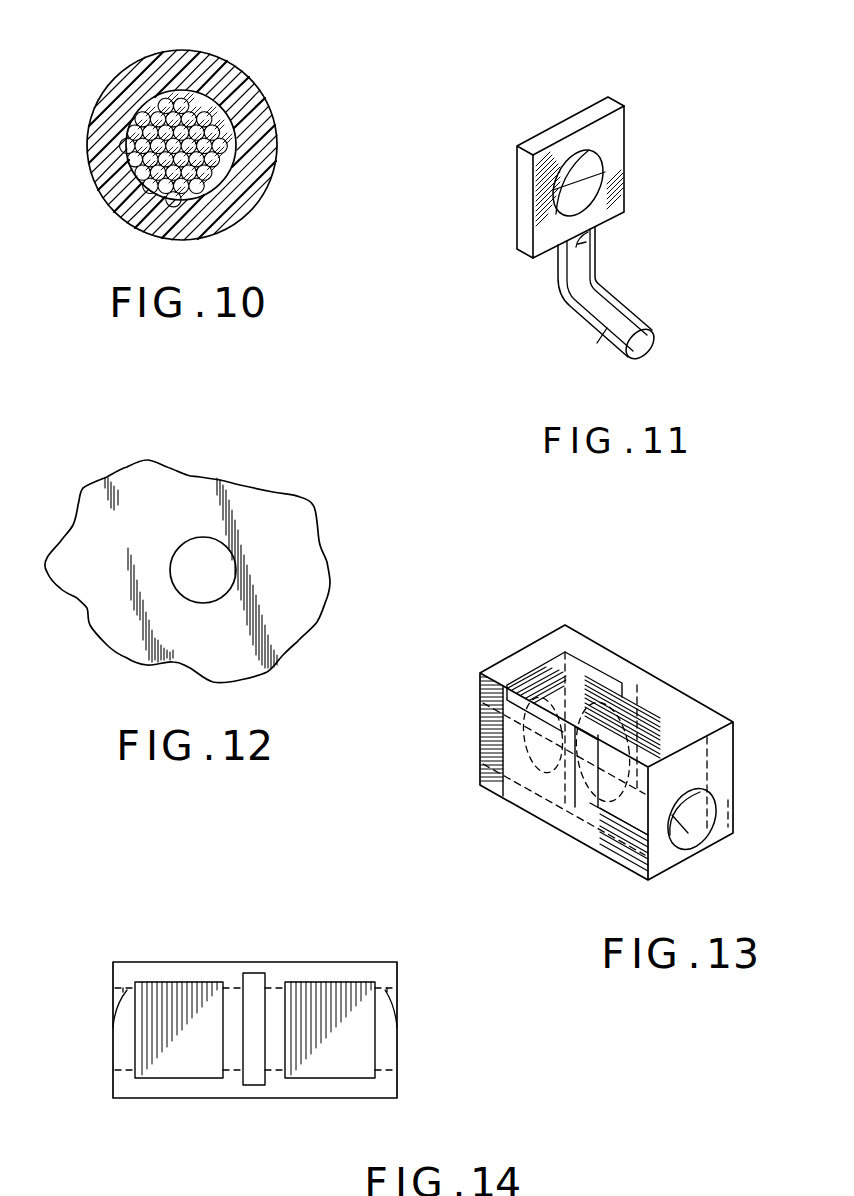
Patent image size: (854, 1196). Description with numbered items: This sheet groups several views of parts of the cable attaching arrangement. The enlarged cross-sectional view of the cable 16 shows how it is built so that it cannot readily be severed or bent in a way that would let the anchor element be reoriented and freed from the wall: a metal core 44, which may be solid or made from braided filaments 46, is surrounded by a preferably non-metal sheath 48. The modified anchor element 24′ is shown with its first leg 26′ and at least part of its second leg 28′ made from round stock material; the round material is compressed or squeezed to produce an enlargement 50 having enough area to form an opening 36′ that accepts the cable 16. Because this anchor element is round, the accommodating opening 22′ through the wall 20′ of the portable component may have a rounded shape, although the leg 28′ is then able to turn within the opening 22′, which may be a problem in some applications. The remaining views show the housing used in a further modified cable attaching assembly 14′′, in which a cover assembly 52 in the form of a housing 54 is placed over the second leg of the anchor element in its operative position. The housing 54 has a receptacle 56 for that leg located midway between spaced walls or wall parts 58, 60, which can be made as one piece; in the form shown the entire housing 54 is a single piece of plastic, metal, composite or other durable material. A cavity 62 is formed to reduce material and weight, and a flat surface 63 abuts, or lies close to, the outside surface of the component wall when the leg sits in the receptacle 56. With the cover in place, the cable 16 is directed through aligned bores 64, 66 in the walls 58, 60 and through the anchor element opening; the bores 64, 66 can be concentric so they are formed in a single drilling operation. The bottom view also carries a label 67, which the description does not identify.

In FIG. 10, the cable 16 is at (247, 205).
In FIG. 10, the sheath 48 is at (110, 85).
In FIG. 10, the braided filaments 46 is at (110, 205).
In FIG. 10, the metal core 44 is at (128, 122).
In FIG. 11, the enlargement 50 is at (604, 194).
In FIG. 11, the anchor element 24′ is at (626, 170).
In FIG. 11, the opening 36′ is at (625, 195).
In FIG. 11, the second leg 28′ is at (580, 260).
In FIG. 11, the first leg 26′ is at (603, 333).
In FIG. 12, the wall 20′ is at (297, 573).
In FIG. 12, the accommodating opening 22′ is at (197, 602).
In FIG. 13, the cable attaching assembly 14′′ is at (611, 756).
In FIG. 14, the cable attaching assembly 14′′ is at (282, 1021).
In FIG. 13, the cover assembly 52 is at (607, 756).
In FIG. 14, the cover assembly 52 is at (244, 1021).
In FIG. 13, the wall/wall part 60 is at (480, 703).
In FIG. 14, the wall/wall part 60 is at (115, 978).
In FIG. 13, the flat surface 63 is at (600, 857).
In FIG. 14, the flat surface 63 is at (148, 968).
In FIG. 13, the housing 54 is at (547, 785).
In FIG. 14, the housing 54 is at (362, 1087).
In FIG. 13, the wall/wall part 58 is at (697, 770).
In FIG. 14, the wall/wall part 58 is at (397, 980).
In FIG. 13, the bore 64 is at (687, 833).
In FIG. 14, the bore 64 is at (398, 1032).
In FIG. 14, the cavity 62 is at (375, 1050).
In FIG. 14, the receptacle 56 is at (263, 1038).
In FIG. 14, the bore 66 is at (113, 1027).
In FIG. 14, the chamfer 67 is at (223, 1038).